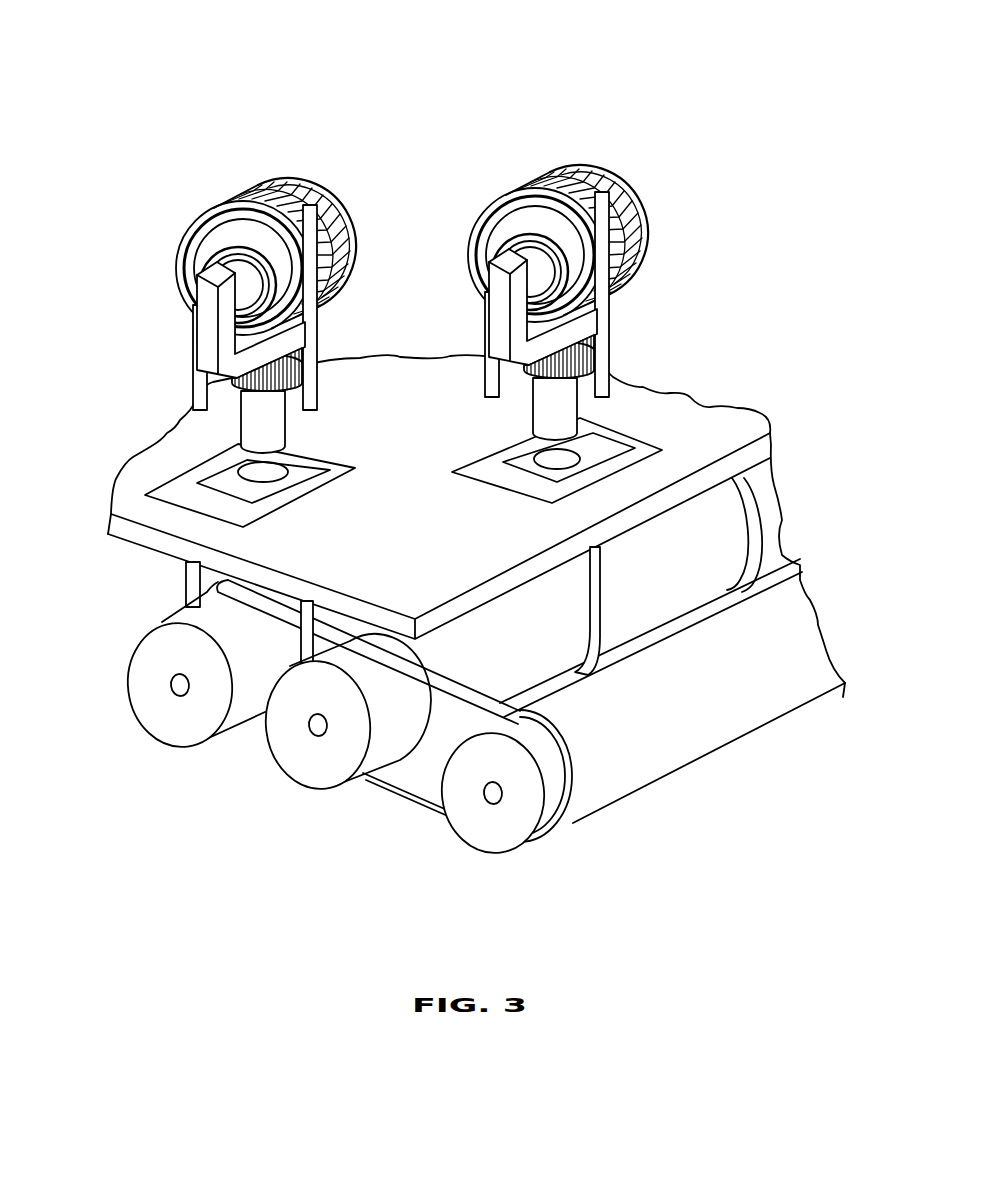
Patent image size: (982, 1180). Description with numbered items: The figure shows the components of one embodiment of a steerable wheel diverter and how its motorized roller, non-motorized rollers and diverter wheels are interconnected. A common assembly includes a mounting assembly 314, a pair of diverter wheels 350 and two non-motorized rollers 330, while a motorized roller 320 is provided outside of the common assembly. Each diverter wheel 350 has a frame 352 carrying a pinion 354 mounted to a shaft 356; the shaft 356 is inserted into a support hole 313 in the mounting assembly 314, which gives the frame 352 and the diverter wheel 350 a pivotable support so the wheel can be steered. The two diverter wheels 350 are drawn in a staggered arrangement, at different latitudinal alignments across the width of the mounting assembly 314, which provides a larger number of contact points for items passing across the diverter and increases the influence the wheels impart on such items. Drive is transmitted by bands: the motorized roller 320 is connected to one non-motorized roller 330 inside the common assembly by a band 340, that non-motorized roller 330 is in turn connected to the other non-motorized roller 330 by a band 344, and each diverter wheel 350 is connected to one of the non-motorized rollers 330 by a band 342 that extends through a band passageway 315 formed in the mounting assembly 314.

The support hole 313 is at (195, 462).
The mounting assembly 314 is at (150, 507).
The band passageway 315 is at (193, 495).
The motorized roller 320 is at (502, 837).
The non-motorized roller 330 is at (165, 713).
The band 340 is at (417, 807).
The band 342 is at (198, 387).
The band 344 is at (238, 590).
The diverter wheel 350 is at (261, 99).
The frame 352 is at (205, 300).
The pinion 354 is at (290, 370).
The shaft 356 is at (253, 408).